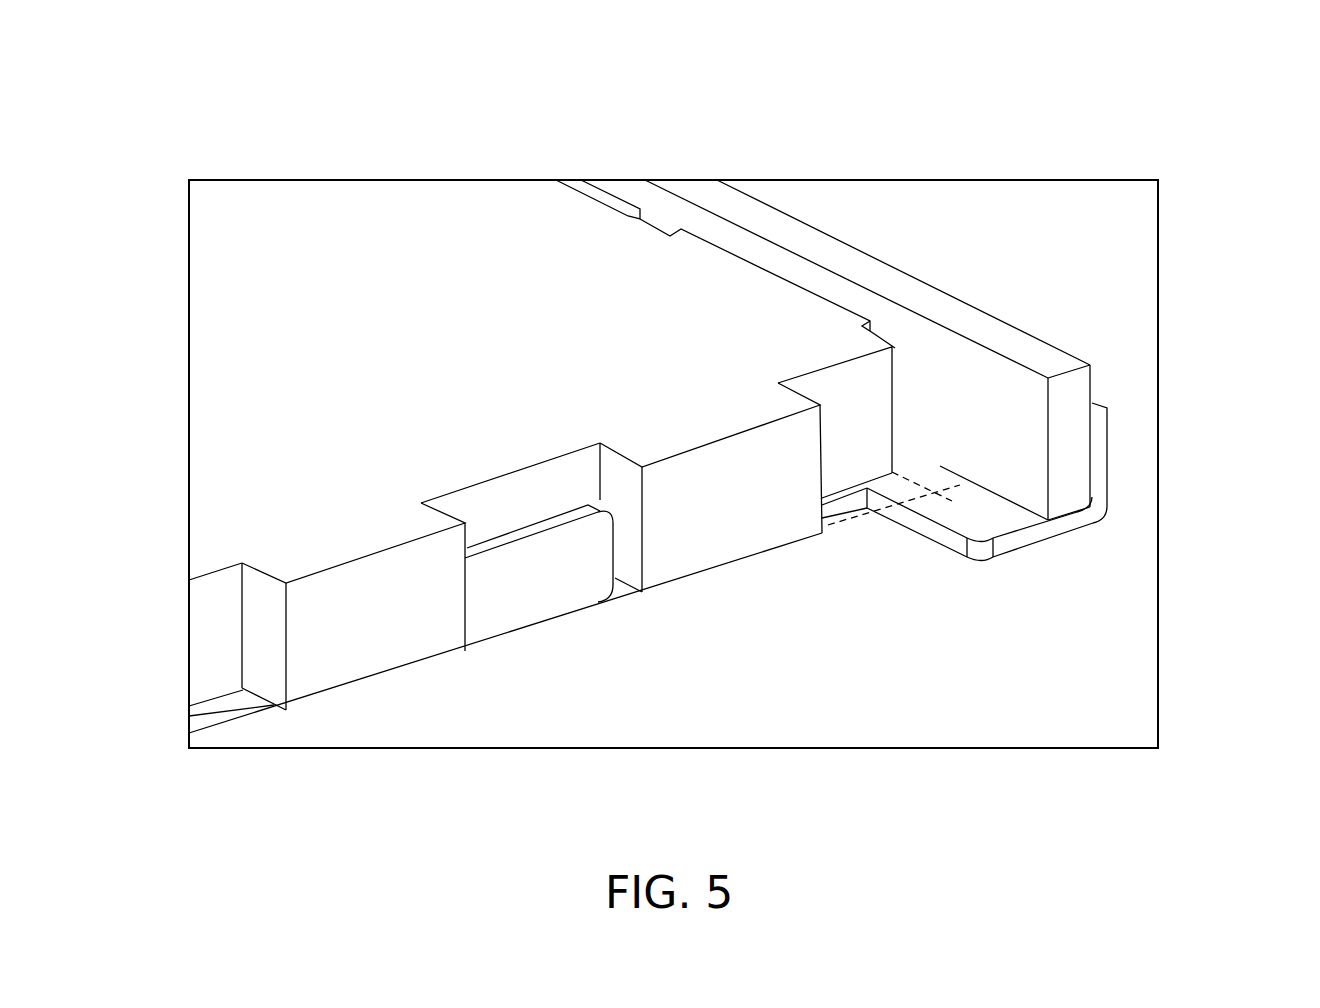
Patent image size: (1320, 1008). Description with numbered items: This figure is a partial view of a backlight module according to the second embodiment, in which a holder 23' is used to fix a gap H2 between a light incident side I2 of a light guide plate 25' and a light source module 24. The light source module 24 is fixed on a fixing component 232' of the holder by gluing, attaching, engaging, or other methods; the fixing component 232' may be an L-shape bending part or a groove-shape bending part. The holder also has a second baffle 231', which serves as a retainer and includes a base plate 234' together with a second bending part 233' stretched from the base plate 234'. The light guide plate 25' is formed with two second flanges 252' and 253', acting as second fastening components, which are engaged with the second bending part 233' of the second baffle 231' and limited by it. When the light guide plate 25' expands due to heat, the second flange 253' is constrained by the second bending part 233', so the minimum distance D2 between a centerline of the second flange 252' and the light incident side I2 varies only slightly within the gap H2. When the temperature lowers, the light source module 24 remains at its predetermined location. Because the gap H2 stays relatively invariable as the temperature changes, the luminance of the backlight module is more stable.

The light guide plate 25' is at (504, 456).
The second flange 253' is at (353, 588).
The second flange 252' is at (711, 464).
The second bending part 233' is at (558, 602).
The second baffle 231' is at (871, 582).
The base plate 234' is at (918, 543).
The fixing component 232' is at (1122, 480).
The light source module 24 is at (1067, 493).
The holder 23' is at (1063, 417).
The minimum distance D2 is at (377, 670).
The gap H2 is at (1013, 480).
The light incident side I2 is at (897, 425).